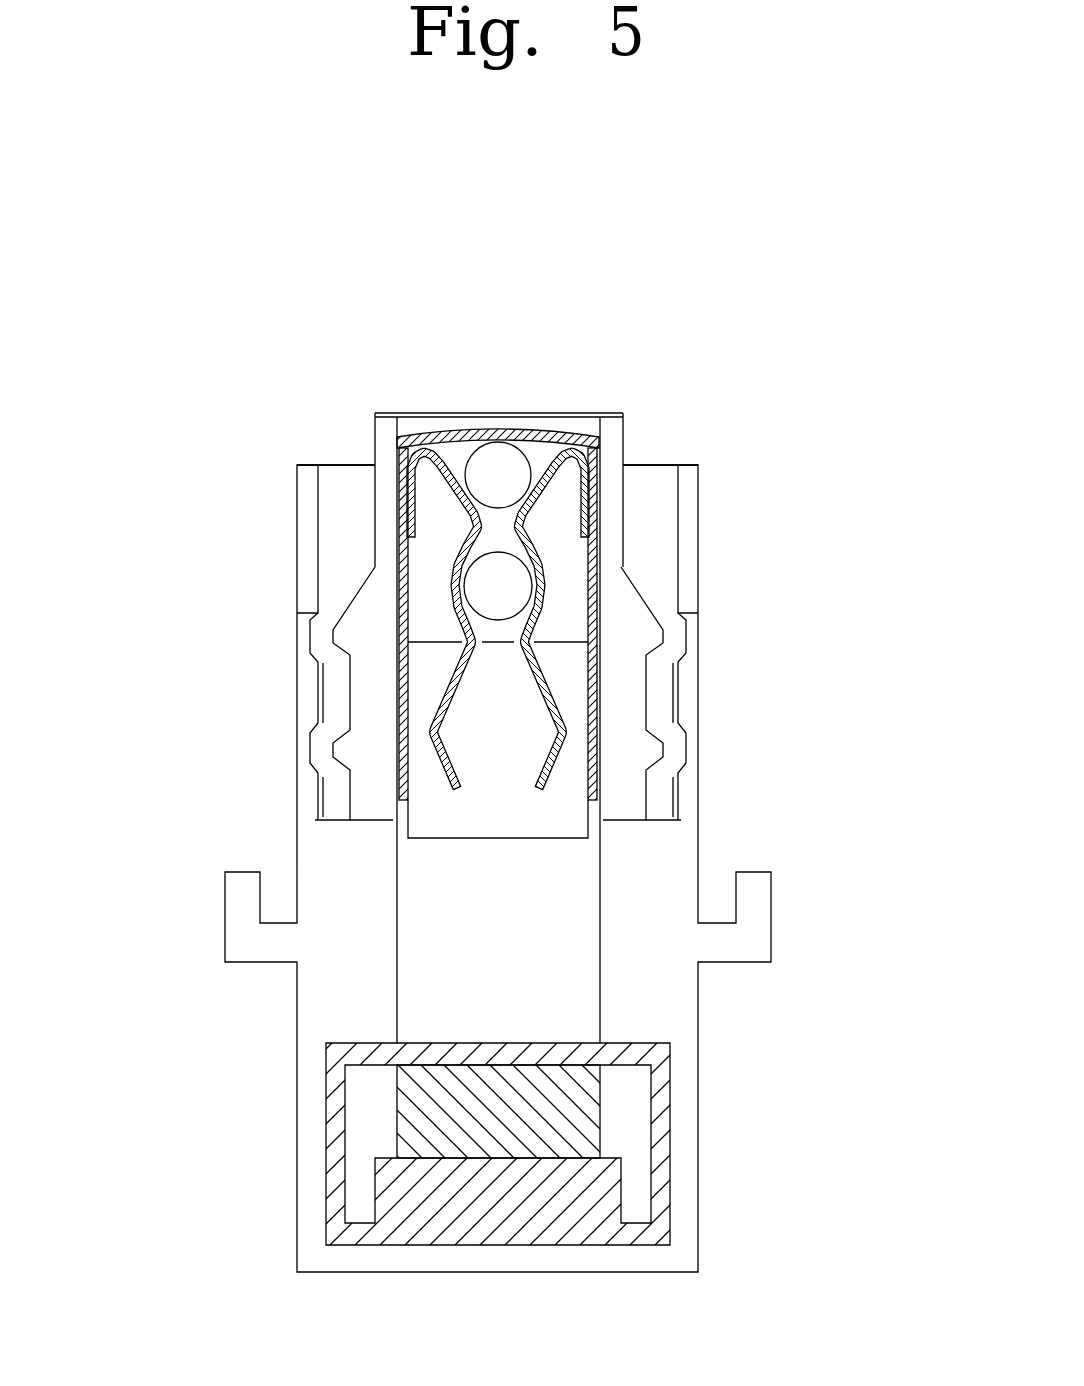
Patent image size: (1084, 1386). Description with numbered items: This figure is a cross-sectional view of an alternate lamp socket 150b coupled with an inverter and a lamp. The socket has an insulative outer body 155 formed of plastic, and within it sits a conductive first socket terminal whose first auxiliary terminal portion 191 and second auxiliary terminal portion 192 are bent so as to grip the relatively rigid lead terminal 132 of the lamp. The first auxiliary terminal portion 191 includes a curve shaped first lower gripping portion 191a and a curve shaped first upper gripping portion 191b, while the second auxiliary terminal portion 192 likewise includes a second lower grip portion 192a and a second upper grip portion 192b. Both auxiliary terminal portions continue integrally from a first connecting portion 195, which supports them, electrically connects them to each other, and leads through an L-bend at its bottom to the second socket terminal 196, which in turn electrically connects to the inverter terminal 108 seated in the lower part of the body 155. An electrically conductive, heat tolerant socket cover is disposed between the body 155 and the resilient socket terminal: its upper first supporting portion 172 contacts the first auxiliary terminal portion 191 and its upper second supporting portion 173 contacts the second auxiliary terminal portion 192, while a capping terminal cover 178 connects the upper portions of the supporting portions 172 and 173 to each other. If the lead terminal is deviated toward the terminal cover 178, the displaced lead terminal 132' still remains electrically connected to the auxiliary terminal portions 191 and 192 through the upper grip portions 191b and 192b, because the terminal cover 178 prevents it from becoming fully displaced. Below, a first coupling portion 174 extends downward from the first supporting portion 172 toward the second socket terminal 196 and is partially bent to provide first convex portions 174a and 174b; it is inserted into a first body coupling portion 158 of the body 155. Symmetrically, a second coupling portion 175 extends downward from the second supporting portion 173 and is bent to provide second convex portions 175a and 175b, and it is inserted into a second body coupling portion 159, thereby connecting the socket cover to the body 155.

The lamp socket 150b is at (730, 290).
The outer body 155 is at (676, 852).
The first body coupling portion 158 is at (345, 482).
The second body coupling portion 159 is at (648, 485).
The first supporting portion 172 is at (385, 430).
The second supporting portion 173 is at (612, 430).
The first coupling portion 174 is at (150, 613).
The first convex portion 174a is at (321, 632).
The first convex portion 174b is at (321, 748).
The second coupling portion 175 is at (846, 613).
The second convex portion 175a is at (675, 632).
The second convex portion 175b is at (675, 748).
The terminal cover 178 is at (440, 432).
The lead terminal 132 is at (492, 414).
The displaced lead terminal 132' is at (530, 470).
The first auxiliary terminal portion 191 is at (150, 463).
The first lower gripping portion 191a is at (458, 580).
The first upper gripping portion 191b is at (458, 493).
The second auxiliary terminal portion 192 is at (846, 463).
The second lower grip portion 192a is at (538, 580).
The second upper grip portion 192b is at (538, 493).
The first connecting portion 195 is at (568, 955).
The second socket terminal 196 is at (590, 1200).
The inverter terminal 108 is at (578, 1105).